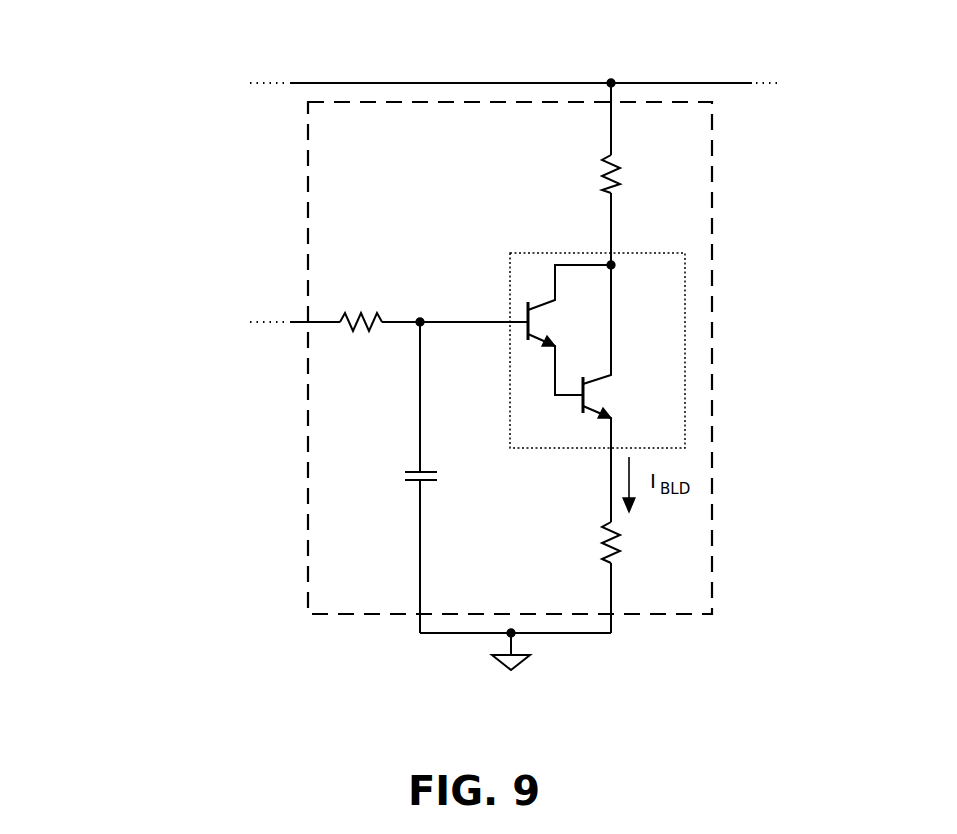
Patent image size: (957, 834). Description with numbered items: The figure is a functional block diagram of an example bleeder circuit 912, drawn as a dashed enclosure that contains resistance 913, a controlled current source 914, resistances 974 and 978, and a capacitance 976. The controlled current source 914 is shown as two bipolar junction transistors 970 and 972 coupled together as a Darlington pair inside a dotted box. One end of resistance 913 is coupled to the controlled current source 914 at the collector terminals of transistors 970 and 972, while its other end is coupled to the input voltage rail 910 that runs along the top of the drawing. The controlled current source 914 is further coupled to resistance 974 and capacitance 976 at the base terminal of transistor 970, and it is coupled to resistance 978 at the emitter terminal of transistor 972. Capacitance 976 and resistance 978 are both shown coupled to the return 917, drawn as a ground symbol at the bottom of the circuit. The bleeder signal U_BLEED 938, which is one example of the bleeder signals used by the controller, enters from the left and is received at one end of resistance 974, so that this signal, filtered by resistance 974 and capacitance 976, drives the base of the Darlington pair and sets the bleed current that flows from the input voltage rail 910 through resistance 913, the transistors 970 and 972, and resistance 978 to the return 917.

The input voltage rail 910 is at (226, 42).
The bleeder circuit 912 is at (700, 622).
The resistance 913 is at (628, 168).
The controlled current source 914 is at (686, 356).
The return 917 is at (527, 688).
The bleeder signal 938 is at (140, 312).
The transistor 970 is at (580, 320).
The transistor 972 is at (597, 396).
The resistance 974 is at (347, 348).
The capacitance 976 is at (397, 480).
The resistance 978 is at (578, 540).